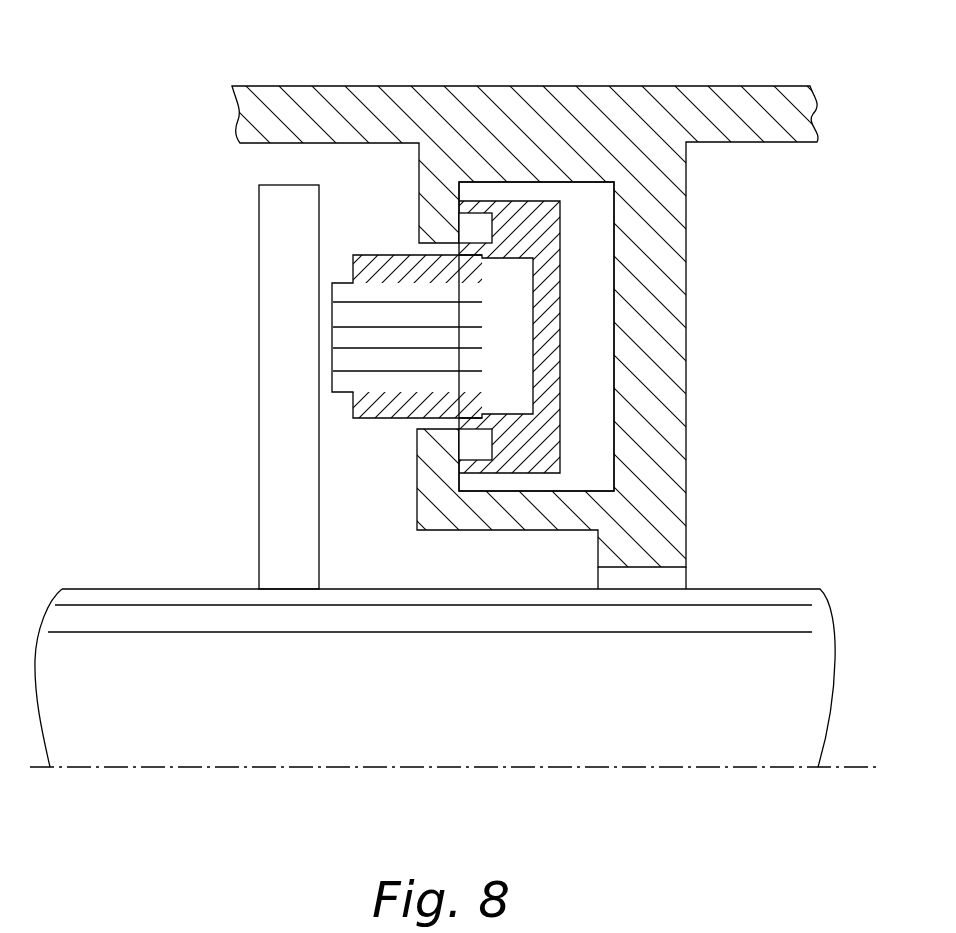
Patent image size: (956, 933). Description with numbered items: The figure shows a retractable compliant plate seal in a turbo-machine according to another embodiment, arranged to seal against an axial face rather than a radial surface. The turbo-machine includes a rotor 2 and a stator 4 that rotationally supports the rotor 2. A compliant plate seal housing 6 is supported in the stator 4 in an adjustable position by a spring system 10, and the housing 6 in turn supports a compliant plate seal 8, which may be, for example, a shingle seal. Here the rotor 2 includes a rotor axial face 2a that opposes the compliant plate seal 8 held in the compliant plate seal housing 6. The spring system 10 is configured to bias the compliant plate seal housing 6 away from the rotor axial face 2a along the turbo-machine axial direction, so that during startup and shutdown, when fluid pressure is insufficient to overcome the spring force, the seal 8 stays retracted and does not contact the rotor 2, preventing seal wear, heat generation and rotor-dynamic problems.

The rotor 2 is at (436, 703).
The rotor axial face 2a is at (300, 494).
The stator 4 is at (599, 123).
The compliant plate seal housing 6 is at (540, 232).
The compliant plate seal 8 is at (358, 334).
The spring system 10 is at (487, 213).